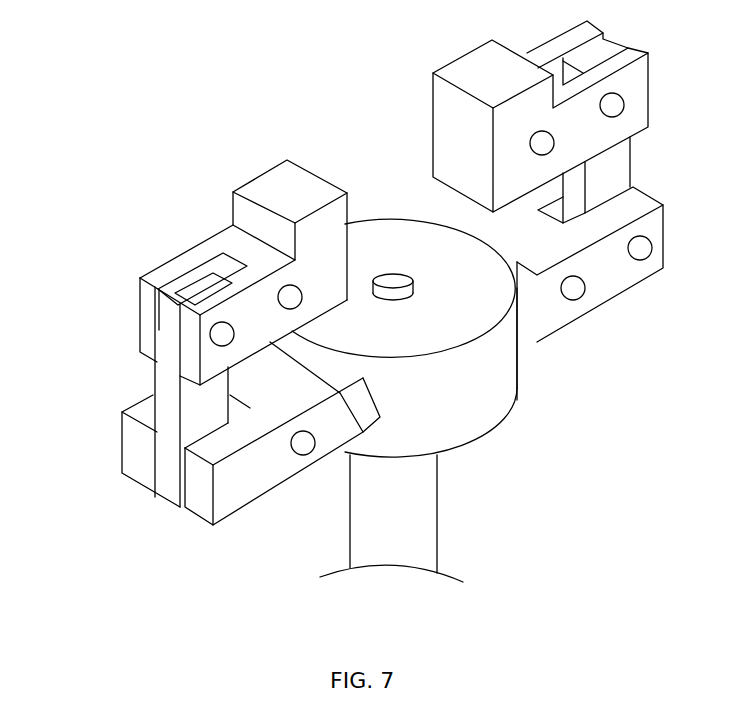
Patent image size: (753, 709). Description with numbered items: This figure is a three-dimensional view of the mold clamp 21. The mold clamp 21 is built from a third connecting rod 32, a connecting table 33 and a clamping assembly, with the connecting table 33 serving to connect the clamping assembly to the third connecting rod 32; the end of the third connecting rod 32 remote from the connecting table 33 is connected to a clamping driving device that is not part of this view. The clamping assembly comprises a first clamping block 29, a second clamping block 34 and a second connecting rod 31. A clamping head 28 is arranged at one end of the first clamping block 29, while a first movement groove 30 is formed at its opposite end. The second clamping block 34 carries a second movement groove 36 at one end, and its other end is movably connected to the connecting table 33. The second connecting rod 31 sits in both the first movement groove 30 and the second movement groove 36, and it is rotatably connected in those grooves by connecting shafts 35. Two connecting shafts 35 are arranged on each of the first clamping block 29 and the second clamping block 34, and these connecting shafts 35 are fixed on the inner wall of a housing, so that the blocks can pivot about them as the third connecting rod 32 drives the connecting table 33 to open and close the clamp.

The mold clamp 21 is at (563, 401).
The clamping head 28 is at (277, 190).
The first clamping block 29 is at (240, 250).
The first movement groove 30 is at (217, 262).
The second connecting rod 31 is at (167, 376).
The third connecting rod 32 is at (408, 503).
The connecting table 33 is at (458, 400).
The second clamping block 34 is at (137, 437).
The connecting shaft 35 is at (220, 335).
The second movement groove 36 is at (238, 408).